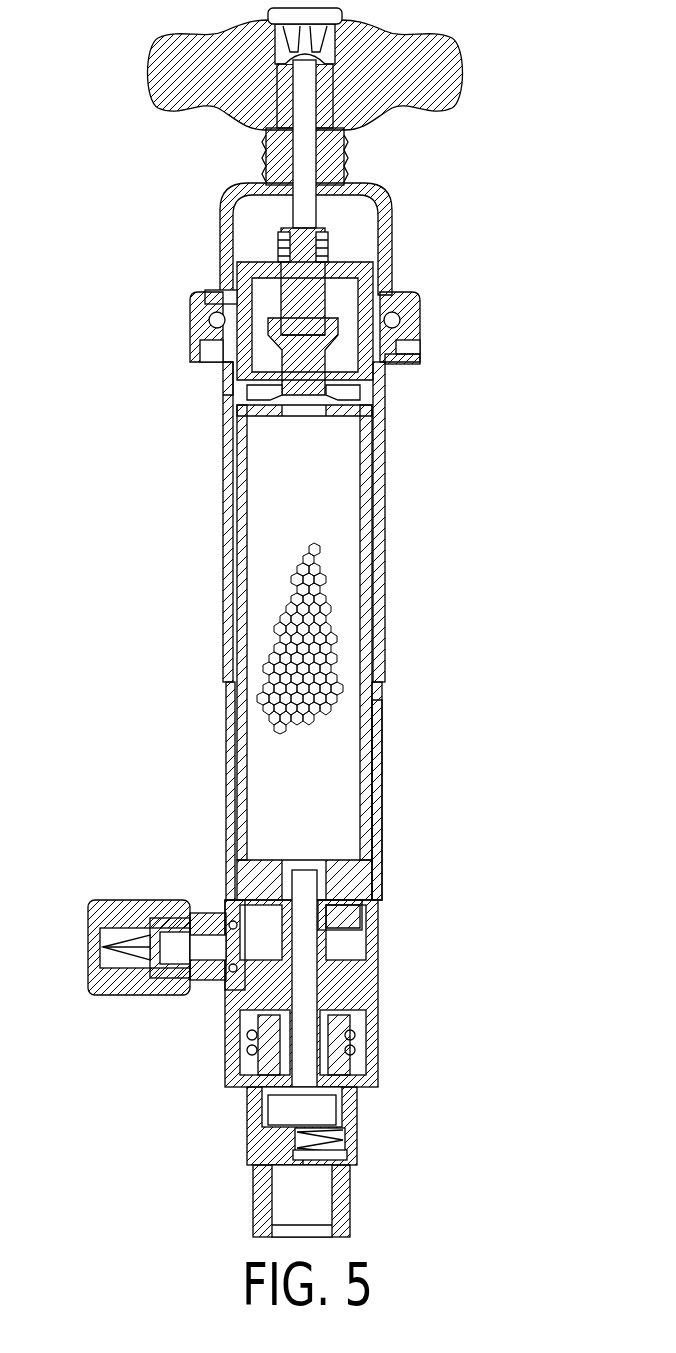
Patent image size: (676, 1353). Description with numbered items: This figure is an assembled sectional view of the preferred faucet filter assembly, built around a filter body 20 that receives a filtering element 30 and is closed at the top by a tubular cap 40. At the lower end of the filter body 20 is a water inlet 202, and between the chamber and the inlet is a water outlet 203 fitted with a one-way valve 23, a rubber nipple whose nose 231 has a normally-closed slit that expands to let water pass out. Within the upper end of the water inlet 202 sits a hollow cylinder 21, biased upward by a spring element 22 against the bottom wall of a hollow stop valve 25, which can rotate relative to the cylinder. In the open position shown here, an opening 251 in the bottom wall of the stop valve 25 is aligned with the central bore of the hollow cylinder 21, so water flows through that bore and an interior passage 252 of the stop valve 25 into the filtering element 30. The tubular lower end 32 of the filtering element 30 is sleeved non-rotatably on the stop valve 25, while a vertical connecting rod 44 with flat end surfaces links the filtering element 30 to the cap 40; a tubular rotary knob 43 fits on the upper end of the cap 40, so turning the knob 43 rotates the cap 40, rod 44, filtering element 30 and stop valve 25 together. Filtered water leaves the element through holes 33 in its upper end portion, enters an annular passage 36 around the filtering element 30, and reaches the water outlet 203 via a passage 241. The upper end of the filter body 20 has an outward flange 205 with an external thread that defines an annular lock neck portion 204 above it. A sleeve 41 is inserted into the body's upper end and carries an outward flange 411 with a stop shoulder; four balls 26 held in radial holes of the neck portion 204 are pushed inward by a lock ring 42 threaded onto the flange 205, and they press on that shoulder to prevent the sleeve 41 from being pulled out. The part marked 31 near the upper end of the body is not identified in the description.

The tubular rotary knob 43 is at (440, 74).
The tubular cap 40 is at (398, 201).
The vertical connecting rod 44 is at (318, 252).
The sleeve 41 is at (240, 280).
The outward flange 411 is at (211, 300).
The lock ring 42 is at (196, 328).
The balls 26 is at (402, 323).
The annular lock neck portion 204 is at (410, 349).
The outward flange 205 is at (410, 360).
The upper end of outer tube 31 is at (226, 377).
The holes 33 is at (273, 395).
The filtering element 30 is at (366, 611).
The annular passage 36 is at (237, 717).
The filter body 20 is at (388, 756).
The passage 241 is at (223, 945).
The tubular lower end 32 is at (328, 913).
The interior passage 252 is at (307, 969).
The nose 231 is at (105, 948).
The one-way valve 23 is at (142, 988).
The water outlet 203 is at (205, 953).
The hollow stop valve 25 is at (352, 1032).
The opening 251 is at (318, 1122).
The spring element 22 is at (300, 1136).
The hollow cylinder 21 is at (303, 1154).
The water inlet 202 is at (325, 1207).